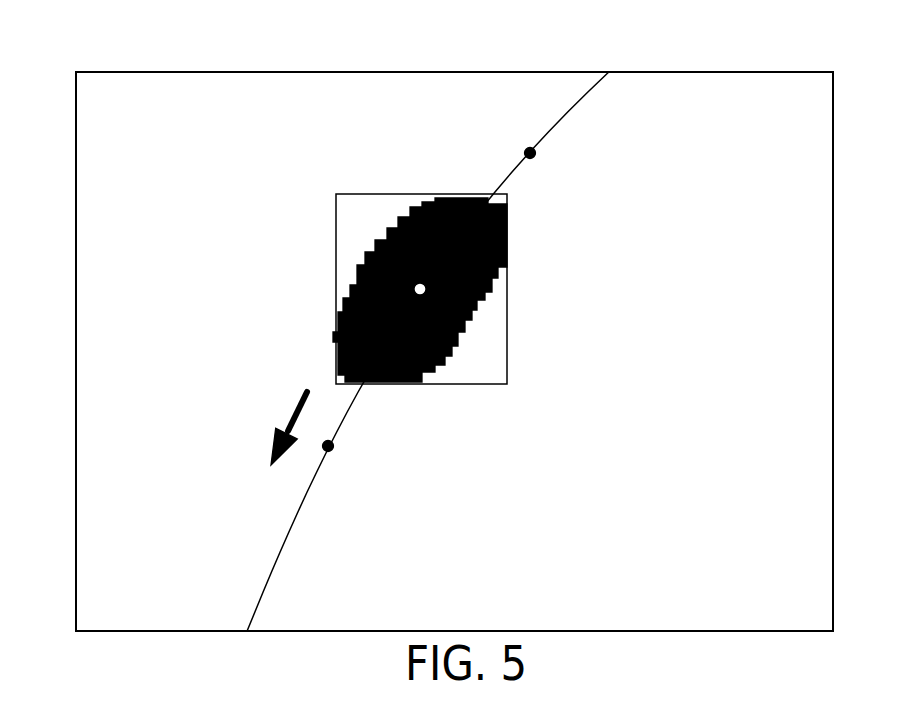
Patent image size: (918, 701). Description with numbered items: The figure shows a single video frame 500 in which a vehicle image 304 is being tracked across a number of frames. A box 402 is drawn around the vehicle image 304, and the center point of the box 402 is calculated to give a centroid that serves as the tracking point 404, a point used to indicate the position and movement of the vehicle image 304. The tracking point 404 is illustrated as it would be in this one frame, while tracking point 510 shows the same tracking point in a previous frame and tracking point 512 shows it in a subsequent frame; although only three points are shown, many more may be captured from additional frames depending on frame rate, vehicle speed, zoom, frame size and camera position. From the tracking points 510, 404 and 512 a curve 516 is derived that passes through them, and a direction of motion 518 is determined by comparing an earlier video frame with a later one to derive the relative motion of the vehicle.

The video frame 500 is at (75, 88).
The vehicle image 304 is at (370, 372).
The box 402 is at (335, 215).
The tracking point 404 is at (426, 290).
The tracking point 510 is at (536, 152).
The tracking point 512 is at (334, 445).
The curve 516 is at (488, 196).
The direction of motion 518 is at (283, 418).